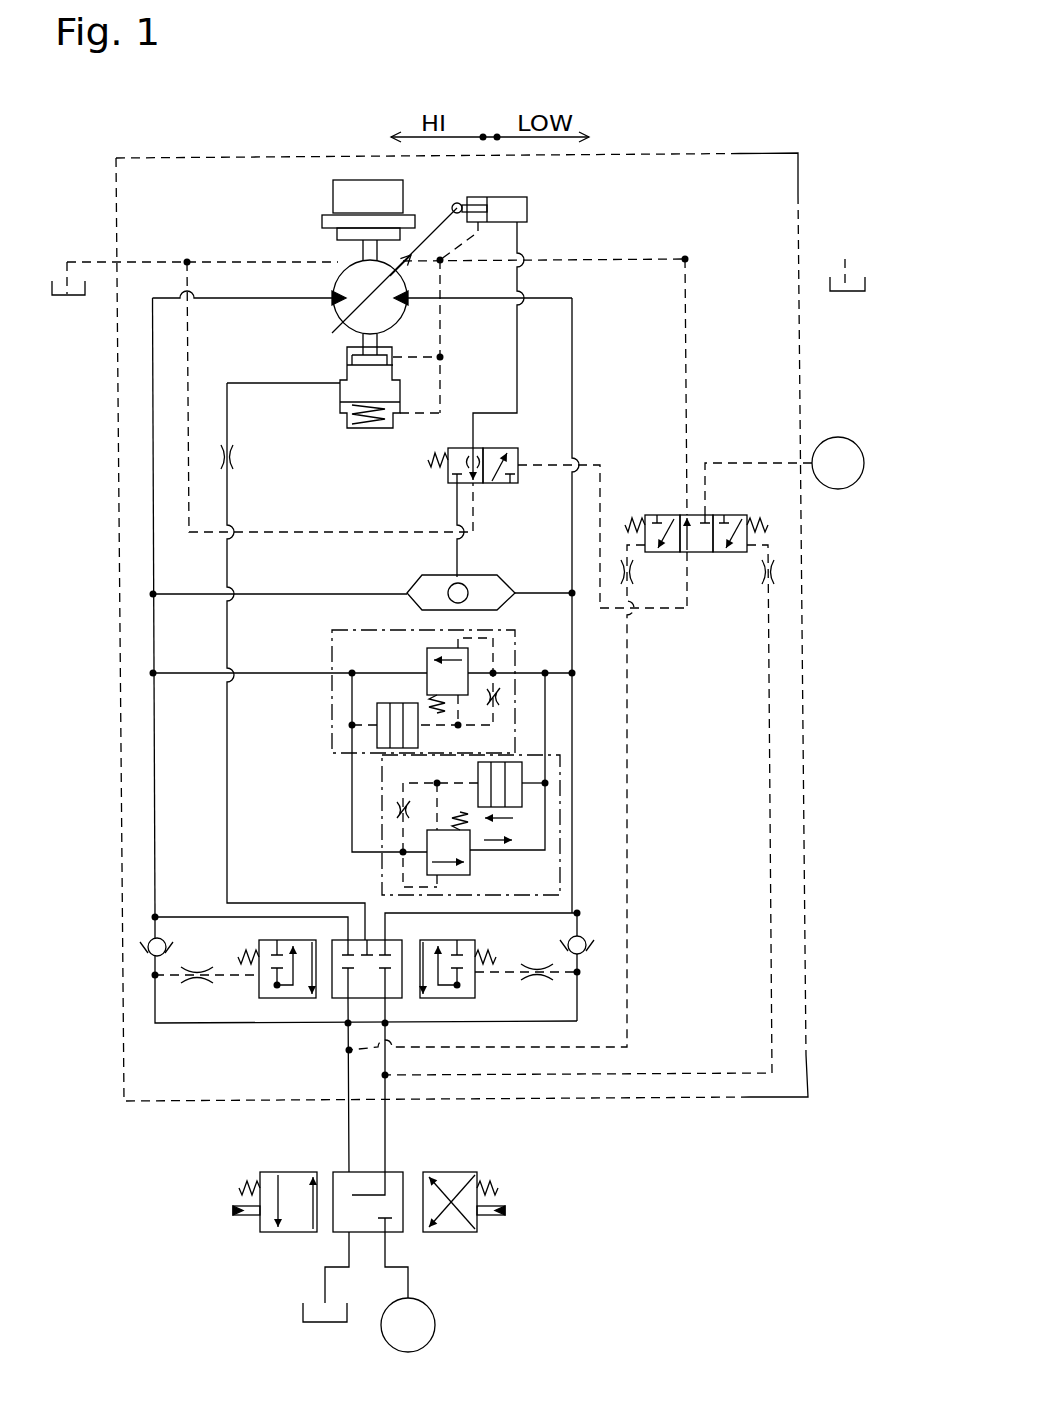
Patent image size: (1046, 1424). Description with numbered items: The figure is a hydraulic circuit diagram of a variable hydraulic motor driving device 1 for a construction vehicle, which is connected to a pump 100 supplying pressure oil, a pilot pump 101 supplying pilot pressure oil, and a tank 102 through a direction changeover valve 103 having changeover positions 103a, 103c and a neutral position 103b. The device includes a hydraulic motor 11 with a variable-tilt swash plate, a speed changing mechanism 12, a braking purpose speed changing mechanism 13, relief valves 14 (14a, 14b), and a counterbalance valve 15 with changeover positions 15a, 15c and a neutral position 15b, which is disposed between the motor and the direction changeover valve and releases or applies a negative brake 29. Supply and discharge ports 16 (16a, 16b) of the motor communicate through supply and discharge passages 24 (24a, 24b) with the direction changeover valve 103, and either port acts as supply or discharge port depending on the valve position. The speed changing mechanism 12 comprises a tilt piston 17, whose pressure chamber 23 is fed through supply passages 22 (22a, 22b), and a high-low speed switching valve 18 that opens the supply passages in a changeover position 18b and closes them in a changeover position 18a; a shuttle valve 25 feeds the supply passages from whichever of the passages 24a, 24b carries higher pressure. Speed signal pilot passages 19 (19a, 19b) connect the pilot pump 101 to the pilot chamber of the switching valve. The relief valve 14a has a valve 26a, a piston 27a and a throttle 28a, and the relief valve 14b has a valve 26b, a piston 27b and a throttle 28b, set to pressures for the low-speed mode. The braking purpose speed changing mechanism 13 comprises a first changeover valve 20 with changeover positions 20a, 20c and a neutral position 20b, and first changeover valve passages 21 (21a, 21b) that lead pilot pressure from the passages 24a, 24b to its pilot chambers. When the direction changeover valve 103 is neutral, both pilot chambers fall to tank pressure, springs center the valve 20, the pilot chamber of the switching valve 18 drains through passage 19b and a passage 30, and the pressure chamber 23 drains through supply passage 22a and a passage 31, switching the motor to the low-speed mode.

The variable hydraulic motor driving device 1 is at (774, 137).
The hydraulic motor 11 is at (330, 274).
The speed changing mechanism 12 is at (523, 345).
The braking purpose speed changing mechanism 13 is at (562, 773).
The relief valves 14 is at (460, 761).
The relief valve 14a is at (396, 708).
The relief valve 14b is at (463, 784).
The counterbalance valve 15 is at (341, 1016).
The changeover position 15a is at (287, 1002).
The neutral position 15b is at (339, 1001).
The changeover position 15c is at (438, 1000).
The supply and discharge ports 16 is at (363, 325).
The supply and discharge port 16a is at (333, 302).
The supply and discharge port 16b is at (412, 300).
The tilt piston 17 is at (556, 213).
The high-low speed switching valve 18 is at (518, 449).
The changeover position 18a is at (446, 451).
The changeover position 18b is at (503, 485).
The speed signal pilot passages 19 is at (665, 497).
The speed signal pilot passage 19a is at (758, 462).
The speed signal pilot passage 19b is at (603, 490).
The first changeover valve 20 is at (700, 581).
The changeover position 20a is at (672, 515).
The neutral position 20b is at (697, 553).
The changeover position 20c is at (740, 515).
The first changeover valve passages 21 is at (561, 810).
The first changeover valve passage 21a is at (633, 825).
The first changeover valve passage 21b is at (768, 925).
The supply passages 22 is at (562, 407).
The supply passage 22a is at (520, 318).
The supply passage 22b is at (461, 553).
The pressure chamber 23 is at (517, 209).
The supply and discharge passages 24 is at (392, 659).
The supply and discharge passage 24a is at (151, 781).
The supply and discharge passage 24b is at (578, 698).
The shuttle valve 25 is at (410, 578).
The valve 26a is at (425, 658).
The valve 26b is at (472, 866).
The piston 27a is at (375, 746).
The piston 27b is at (523, 768).
The throttle 28a is at (500, 697).
The throttle 28b is at (398, 810).
The negative brake 29 is at (333, 415).
The passage 30 is at (690, 335).
The passage 31 is at (306, 531).
The pump 100 is at (445, 1324).
The pilot pump 101 is at (841, 491).
The tank 102 is at (68, 300).
The direction changeover valve 103 is at (415, 1204).
The changeover position 103a is at (288, 1234).
The neutral position 103b is at (397, 1169).
The changeover position 103c is at (448, 1234).